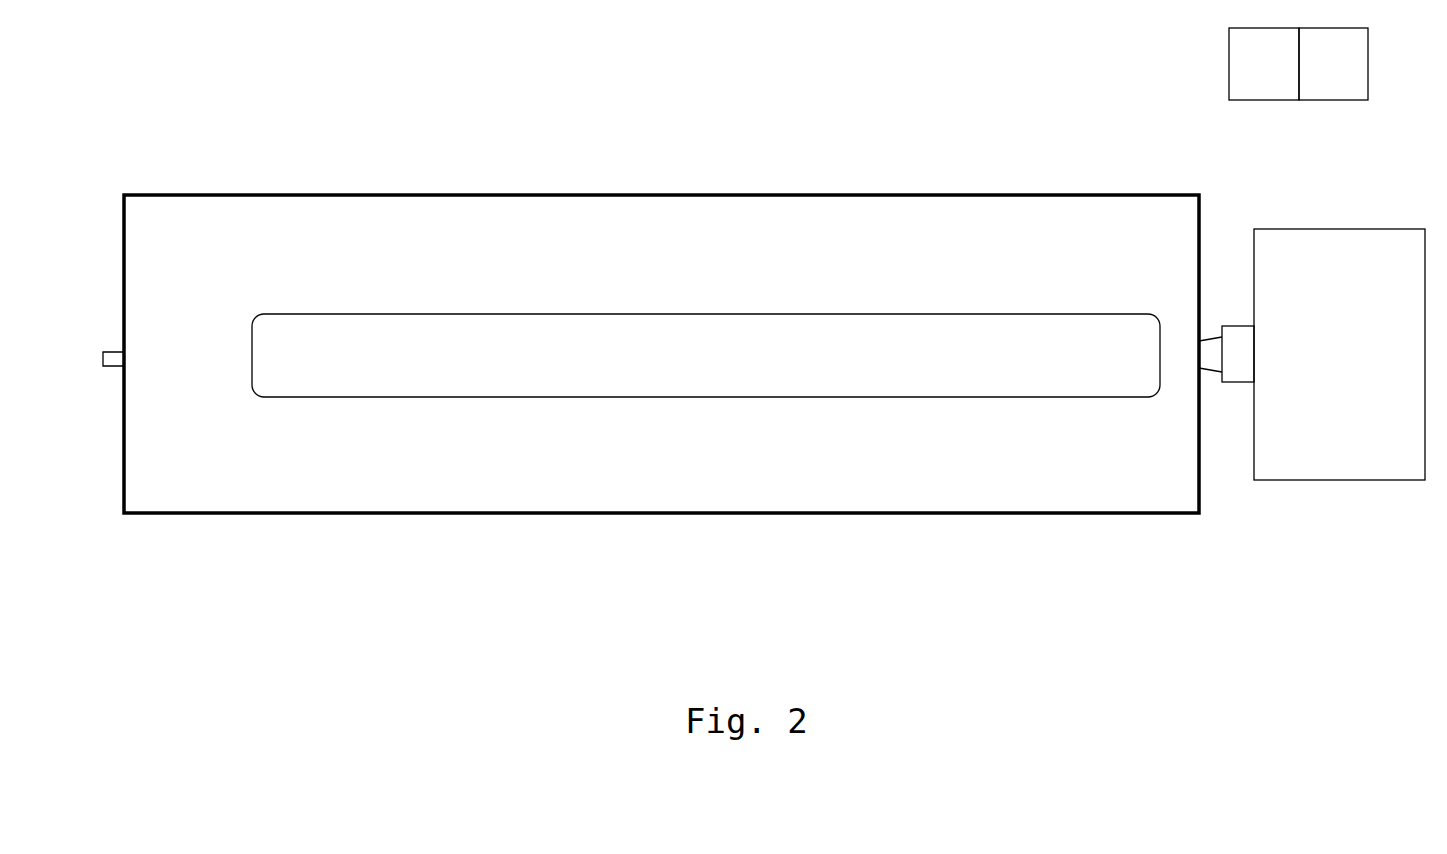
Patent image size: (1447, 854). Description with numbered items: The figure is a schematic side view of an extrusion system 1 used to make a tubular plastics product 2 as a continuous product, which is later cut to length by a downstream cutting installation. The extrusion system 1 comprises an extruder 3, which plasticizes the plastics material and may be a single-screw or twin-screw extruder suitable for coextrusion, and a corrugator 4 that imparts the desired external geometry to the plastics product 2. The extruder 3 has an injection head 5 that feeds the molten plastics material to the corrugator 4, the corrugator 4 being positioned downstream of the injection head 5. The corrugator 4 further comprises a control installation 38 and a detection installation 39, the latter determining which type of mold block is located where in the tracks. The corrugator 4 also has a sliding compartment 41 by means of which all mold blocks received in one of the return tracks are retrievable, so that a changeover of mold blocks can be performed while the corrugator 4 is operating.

The extrusion system 1 is at (611, 80).
The plastics product 2 is at (108, 353).
The extruder 3 is at (1340, 482).
The corrugator 4 is at (466, 184).
The injection head 5 is at (1245, 377).
The sliding compartment 41 is at (428, 394).
The control installation 38 is at (1313, 82).
The detection installation 39 is at (1243, 82).